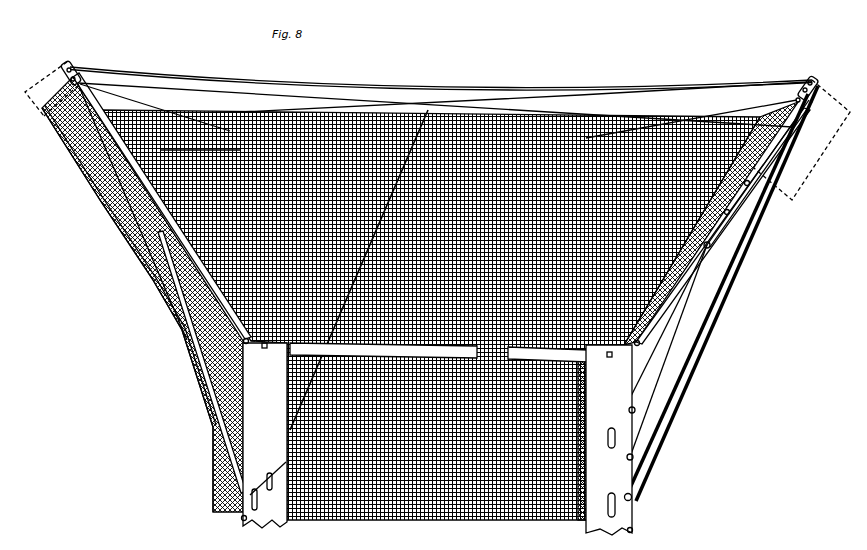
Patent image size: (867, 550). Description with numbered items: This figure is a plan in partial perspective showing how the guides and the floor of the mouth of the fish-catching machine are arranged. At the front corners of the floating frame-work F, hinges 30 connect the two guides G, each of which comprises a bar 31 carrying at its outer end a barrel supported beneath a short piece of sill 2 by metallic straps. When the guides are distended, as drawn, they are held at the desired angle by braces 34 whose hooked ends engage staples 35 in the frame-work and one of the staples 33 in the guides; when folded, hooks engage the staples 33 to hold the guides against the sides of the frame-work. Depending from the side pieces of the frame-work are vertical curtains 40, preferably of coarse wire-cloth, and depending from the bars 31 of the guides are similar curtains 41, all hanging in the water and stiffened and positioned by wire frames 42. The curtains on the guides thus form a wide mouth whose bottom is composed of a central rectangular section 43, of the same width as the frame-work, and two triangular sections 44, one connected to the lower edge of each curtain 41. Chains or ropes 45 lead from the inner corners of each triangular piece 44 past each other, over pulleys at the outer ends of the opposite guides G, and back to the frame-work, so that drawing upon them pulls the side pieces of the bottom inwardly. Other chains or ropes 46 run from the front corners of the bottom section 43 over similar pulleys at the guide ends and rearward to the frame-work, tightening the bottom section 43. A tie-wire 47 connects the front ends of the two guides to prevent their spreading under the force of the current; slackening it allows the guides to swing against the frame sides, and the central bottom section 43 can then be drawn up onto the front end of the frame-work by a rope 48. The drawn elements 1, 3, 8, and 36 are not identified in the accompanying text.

The horizontal bar 1 is at (497, 353).
The sill 2 is at (44, 110).
The fastening square 3 is at (264, 350).
The post 8 is at (437, 439).
The hinges 30 is at (247, 345).
The bar 31 is at (92, 99).
The staples 33 is at (104, 202).
The braces 34 is at (204, 362).
The staples 35 is at (242, 524).
The slot 36 is at (244, 400).
The vertical curtains 40 is at (213, 478).
The curtains 41 is at (142, 250).
The wire frames 42 is at (124, 220).
The central rectangular section 43 is at (431, 315).
The triangular sections 44 is at (200, 161).
The chains or ropes 45 is at (186, 84).
The chains or ropes 46 is at (168, 108).
The tie-wire 47 is at (430, 94).
The rope 48 is at (332, 351).
The frame-work F is at (626, 508).
The guides G is at (160, 198).